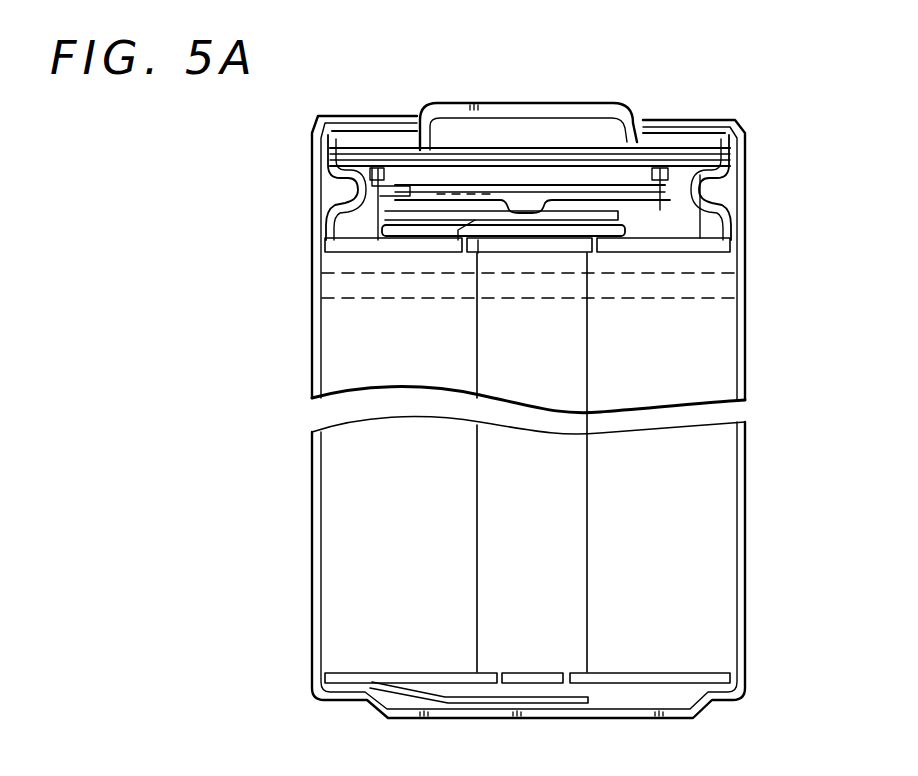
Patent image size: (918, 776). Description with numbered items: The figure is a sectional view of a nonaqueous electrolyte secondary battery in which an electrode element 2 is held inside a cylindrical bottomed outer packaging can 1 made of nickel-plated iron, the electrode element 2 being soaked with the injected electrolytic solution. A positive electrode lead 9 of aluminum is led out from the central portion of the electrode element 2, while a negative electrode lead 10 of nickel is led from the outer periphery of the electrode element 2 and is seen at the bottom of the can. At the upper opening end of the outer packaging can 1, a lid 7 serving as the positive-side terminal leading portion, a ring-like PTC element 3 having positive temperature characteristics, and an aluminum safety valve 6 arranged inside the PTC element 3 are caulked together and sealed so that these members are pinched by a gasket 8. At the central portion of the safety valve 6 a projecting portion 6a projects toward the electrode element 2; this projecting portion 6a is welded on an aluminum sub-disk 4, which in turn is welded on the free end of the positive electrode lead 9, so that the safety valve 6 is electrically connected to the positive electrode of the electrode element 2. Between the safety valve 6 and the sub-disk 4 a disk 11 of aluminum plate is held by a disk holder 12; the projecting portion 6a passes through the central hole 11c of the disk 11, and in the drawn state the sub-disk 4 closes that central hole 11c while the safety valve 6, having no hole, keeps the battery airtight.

The outer packaging can 1 is at (752, 492).
The electrode element 2 is at (725, 568).
The PTC element 3 is at (606, 200).
The sub-disk 4 is at (515, 215).
The safety valve 6 is at (712, 188).
The projecting portion 6a is at (524, 200).
The lid 7 is at (533, 104).
The gasket 8 is at (723, 215).
The positive electrode lead 9 is at (386, 229).
The negative electrode lead 10 is at (546, 703).
The disk 11 is at (665, 215).
The central hole 11c is at (560, 200).
The disk holder 12 is at (663, 212).